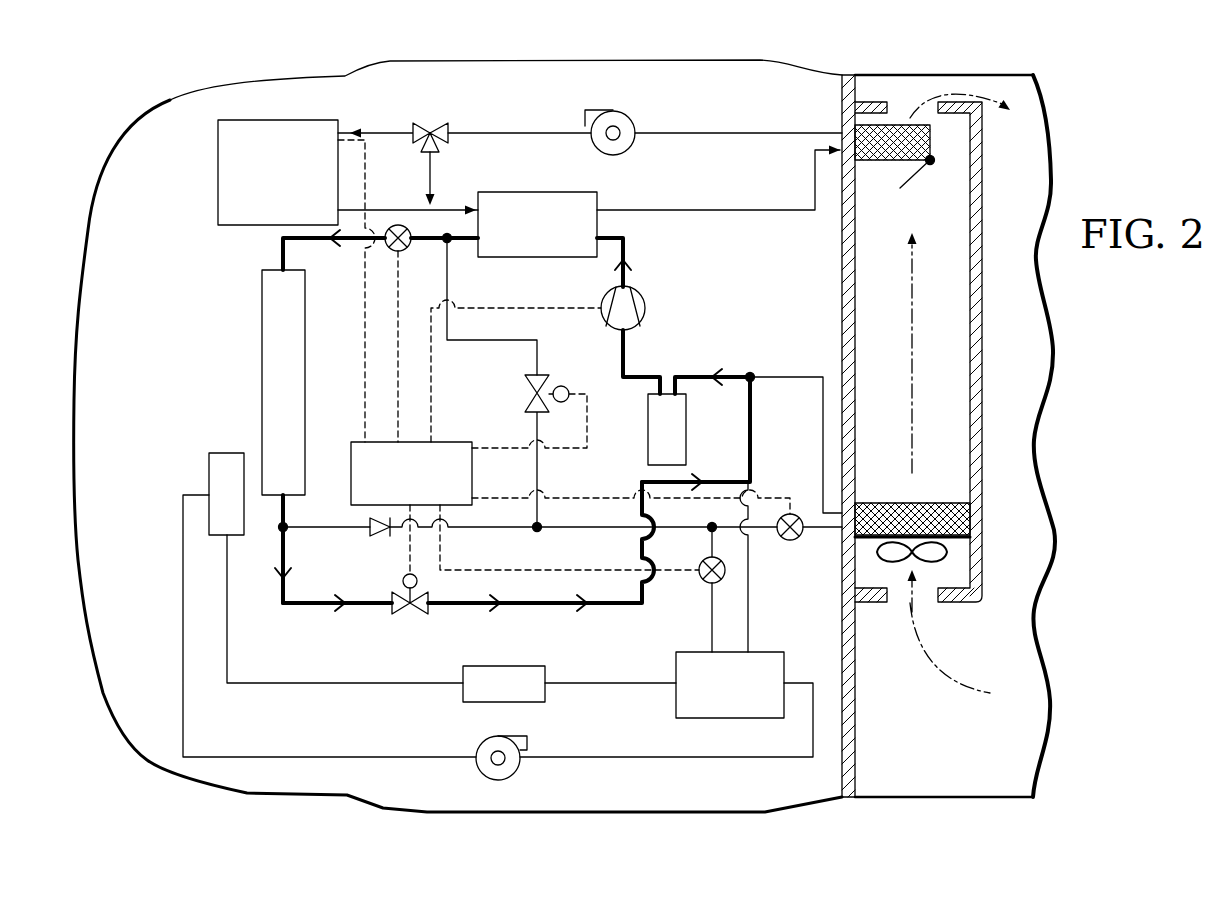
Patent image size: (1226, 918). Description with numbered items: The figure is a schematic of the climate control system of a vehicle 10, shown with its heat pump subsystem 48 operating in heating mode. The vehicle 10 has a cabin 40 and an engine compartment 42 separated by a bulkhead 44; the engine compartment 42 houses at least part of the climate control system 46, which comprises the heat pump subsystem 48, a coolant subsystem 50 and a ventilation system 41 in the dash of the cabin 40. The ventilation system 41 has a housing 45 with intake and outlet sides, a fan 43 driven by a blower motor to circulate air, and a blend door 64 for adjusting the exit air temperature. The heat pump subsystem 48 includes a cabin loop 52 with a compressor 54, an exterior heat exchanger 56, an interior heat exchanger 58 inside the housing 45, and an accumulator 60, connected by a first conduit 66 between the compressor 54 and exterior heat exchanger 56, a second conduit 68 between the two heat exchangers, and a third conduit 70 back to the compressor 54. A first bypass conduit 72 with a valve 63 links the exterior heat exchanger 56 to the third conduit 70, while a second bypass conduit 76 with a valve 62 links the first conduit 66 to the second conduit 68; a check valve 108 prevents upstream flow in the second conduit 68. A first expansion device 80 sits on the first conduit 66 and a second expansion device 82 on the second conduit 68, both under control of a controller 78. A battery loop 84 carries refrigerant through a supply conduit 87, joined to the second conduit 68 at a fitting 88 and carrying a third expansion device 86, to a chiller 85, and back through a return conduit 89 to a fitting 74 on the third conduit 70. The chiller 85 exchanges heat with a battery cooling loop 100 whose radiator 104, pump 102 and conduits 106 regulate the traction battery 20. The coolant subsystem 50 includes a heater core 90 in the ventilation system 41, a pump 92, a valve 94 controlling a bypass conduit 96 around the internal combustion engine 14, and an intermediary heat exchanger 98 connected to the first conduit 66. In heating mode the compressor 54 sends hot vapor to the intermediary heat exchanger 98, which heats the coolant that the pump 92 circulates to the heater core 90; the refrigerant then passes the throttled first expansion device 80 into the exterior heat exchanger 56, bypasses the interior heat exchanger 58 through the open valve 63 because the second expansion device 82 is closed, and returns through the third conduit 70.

The vehicle 10 is at (310, 55).
The internal combustion engine 14 is at (265, 184).
The traction battery 20 is at (491, 696).
The cabin 40 is at (999, 377).
The ventilation system 41 is at (1000, 148).
The engine compartment 42 is at (142, 250).
The fan 43 is at (948, 553).
The bulkhead 44 is at (856, 772).
The housing 45 is at (983, 325).
The climate control system 46 is at (180, 298).
The heat pump subsystem 48 is at (716, 273).
The coolant subsystem 50 is at (692, 103).
The cabin loop 52 is at (232, 385).
The compressor 54 is at (643, 298).
The exterior heat exchanger 56 is at (270, 384).
The interior heat exchanger 58 is at (915, 503).
The accumulator 60 is at (654, 441).
The valve 62 is at (543, 372).
The valve 63 is at (403, 617).
The blend door 64 is at (923, 172).
The first conduit 66 is at (624, 246).
The second conduit 68 is at (340, 528).
The third conduit 70 is at (808, 377).
The first bypass conduit 72 is at (318, 606).
The fitting 74 is at (750, 372).
The second bypass conduit 76 is at (500, 345).
The controller 78 is at (398, 484).
The first expansion device 80 is at (410, 248).
The second expansion device 82 is at (796, 541).
The battery loop 84 is at (770, 618).
The chiller 85 is at (717, 699).
The third expansion device 86 is at (702, 586).
The supply conduit 87 is at (710, 640).
The fitting 88 is at (709, 532).
The return conduit 89 is at (750, 608).
The heater core 90 is at (870, 162).
The pump 92 is at (604, 113).
The valve 94 is at (428, 122).
The bypass conduit 96 is at (433, 180).
The intermediary heat exchanger 98 is at (524, 236).
The battery cooling loop 100 is at (590, 772).
The pump 102 is at (480, 742).
The radiator 104 is at (209, 478).
The conduits 106 is at (352, 685).
The check valve 108 is at (385, 538).